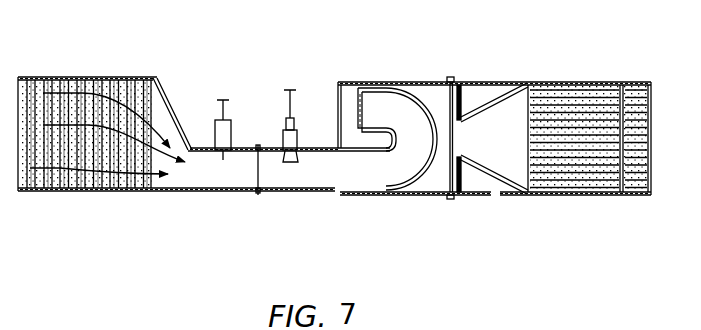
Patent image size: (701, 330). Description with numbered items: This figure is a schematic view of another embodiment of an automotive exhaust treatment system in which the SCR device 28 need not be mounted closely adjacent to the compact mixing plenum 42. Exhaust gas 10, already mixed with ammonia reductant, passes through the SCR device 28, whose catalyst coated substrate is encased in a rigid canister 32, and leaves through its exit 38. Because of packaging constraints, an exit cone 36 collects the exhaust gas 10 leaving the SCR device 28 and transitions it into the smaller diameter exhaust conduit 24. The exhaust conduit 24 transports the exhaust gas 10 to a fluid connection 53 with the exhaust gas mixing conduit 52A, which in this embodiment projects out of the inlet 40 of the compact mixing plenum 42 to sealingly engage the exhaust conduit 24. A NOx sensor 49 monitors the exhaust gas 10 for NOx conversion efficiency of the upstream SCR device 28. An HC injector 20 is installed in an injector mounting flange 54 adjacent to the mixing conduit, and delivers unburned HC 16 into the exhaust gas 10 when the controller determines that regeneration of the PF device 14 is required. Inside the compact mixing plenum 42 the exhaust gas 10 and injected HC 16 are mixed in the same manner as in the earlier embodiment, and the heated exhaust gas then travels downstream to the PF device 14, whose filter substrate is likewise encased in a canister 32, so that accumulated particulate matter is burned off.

The exhaust gas 10 is at (107, 127).
The PF device 14 is at (636, 80).
The unburned HC 16 is at (297, 162).
The HC injector 20 is at (293, 140).
The exhaust conduit 24 is at (240, 172).
The SCR device 28 is at (80, 72).
The canister 32 is at (98, 177).
The exit cone 36 is at (167, 90).
The exit 38 is at (160, 182).
The inlet 40 is at (338, 108).
The compact mixing plenum 42 is at (375, 80).
The NOx sensor 49 is at (232, 135).
The exhaust gas mixing conduit 52A is at (370, 170).
The fluid connection 53 is at (258, 193).
The injector mounting flange 54 is at (281, 138).